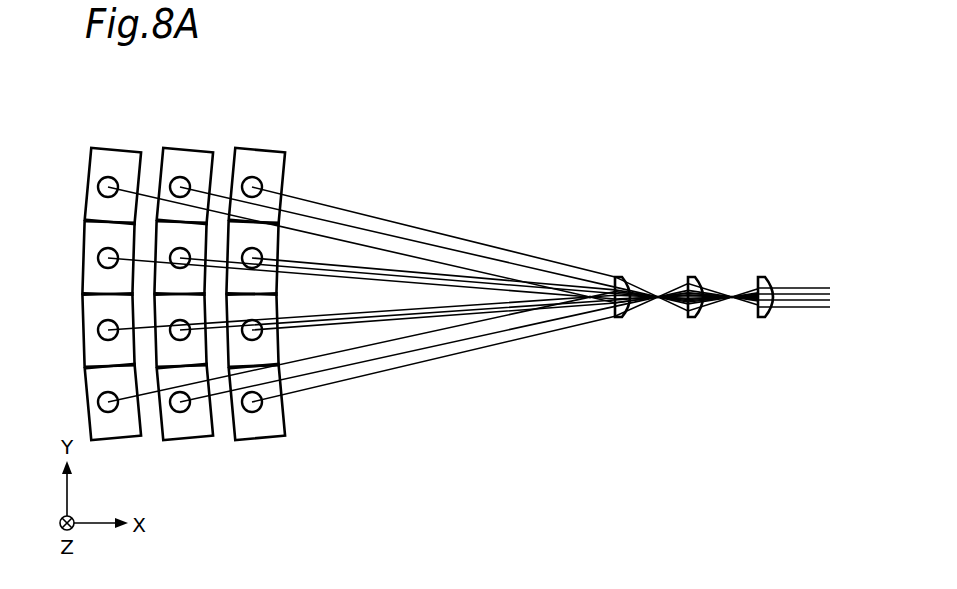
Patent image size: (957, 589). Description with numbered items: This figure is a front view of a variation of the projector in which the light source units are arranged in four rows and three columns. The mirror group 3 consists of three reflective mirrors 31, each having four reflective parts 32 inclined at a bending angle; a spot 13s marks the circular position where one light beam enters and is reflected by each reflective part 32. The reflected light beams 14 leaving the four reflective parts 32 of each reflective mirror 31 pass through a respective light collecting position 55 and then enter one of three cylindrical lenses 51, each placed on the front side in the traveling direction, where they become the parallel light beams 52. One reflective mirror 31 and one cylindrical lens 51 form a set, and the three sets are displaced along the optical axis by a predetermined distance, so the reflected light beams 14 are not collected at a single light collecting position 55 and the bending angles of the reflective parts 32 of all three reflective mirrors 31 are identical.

The mirror group 3 is at (272, 112).
The reflective mirror 31 is at (113, 148).
The reflective part 32 is at (93, 373).
The spot 13s is at (255, 185).
The reflected light beam 14 is at (428, 243).
The cylindrical lens 51 is at (620, 318).
The parallel light beams 52 is at (650, 290).
The light collecting position 55 is at (587, 312).